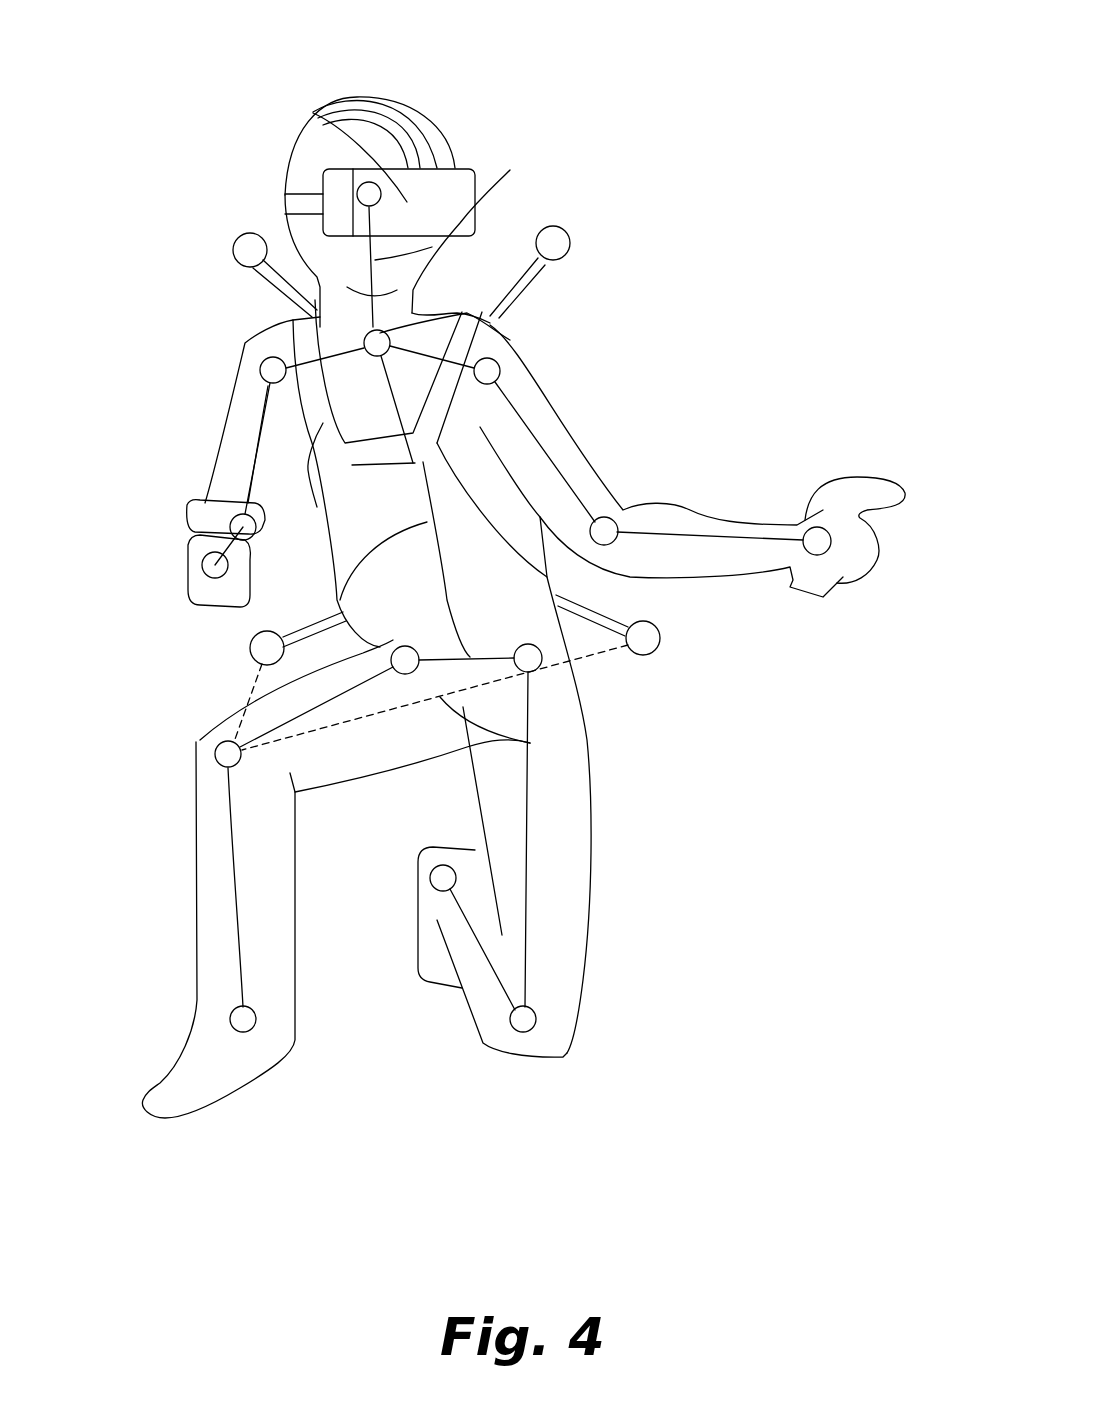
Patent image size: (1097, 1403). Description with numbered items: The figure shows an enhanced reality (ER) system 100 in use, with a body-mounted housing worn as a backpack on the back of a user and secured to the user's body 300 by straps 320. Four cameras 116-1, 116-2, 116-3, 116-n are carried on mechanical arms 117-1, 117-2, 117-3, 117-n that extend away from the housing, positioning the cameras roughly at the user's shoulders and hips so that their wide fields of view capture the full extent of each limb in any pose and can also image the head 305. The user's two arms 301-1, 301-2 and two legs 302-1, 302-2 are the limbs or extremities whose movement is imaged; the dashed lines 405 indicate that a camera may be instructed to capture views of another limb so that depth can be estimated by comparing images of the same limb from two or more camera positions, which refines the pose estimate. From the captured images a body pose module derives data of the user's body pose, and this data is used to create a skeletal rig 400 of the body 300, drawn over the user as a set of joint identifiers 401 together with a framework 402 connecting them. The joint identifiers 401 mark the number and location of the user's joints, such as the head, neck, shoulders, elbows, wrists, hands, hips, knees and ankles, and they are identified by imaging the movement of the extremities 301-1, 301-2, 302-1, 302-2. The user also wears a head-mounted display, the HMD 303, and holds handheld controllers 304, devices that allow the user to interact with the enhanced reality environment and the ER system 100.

The ER system 100 is at (544, 782).
The camera 116-1 is at (573, 250).
The camera 116-2 is at (243, 238).
The camera 116-3 is at (662, 634).
The camera 116-n is at (250, 643).
The mechanical arm 117-1 is at (530, 277).
The mechanical arm 117-2 is at (277, 285).
The mechanical arm 117-3 is at (593, 617).
The mechanical arm 117-n is at (290, 620).
The body 300 is at (400, 296).
The arm 301-1 is at (540, 418).
The arm 301-2 is at (222, 437).
The leg 302-1 is at (563, 892).
The leg 302-2 is at (217, 853).
The HMD 303 is at (313, 112).
The handheld controller 304 is at (208, 510).
The head 305 is at (390, 138).
The strap 320 is at (290, 413).
The skeletal rig 400 is at (510, 170).
The joint identifier 401 is at (362, 185).
The framework 402 is at (337, 575).
The dashed lines 405 is at (530, 743).